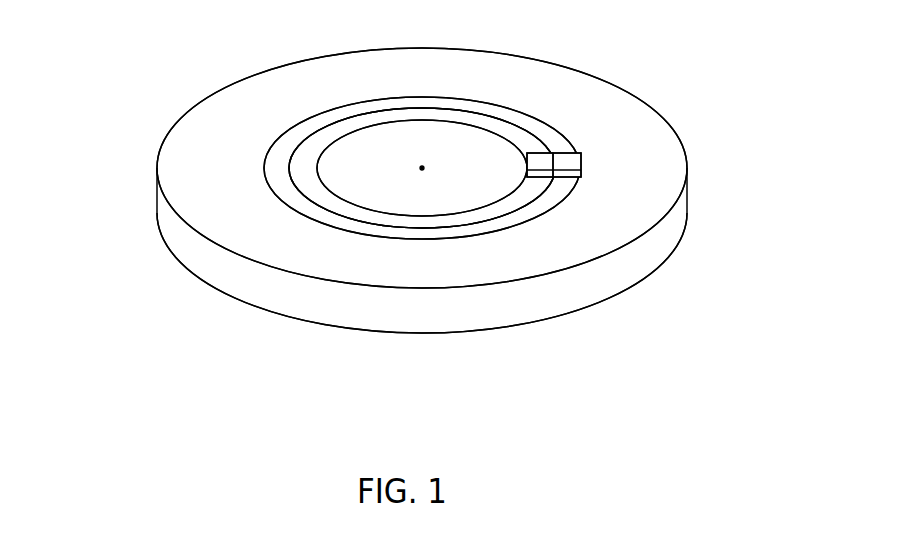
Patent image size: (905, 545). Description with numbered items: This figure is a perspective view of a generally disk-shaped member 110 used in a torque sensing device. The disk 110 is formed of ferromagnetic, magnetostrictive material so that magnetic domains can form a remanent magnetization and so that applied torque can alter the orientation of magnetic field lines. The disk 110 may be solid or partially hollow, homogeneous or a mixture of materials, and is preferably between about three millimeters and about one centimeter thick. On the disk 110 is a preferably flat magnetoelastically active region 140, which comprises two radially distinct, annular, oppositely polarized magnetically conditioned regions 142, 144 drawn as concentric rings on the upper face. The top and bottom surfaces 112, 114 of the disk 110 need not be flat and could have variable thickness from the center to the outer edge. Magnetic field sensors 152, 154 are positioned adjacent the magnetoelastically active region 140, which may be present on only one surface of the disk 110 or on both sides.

The disk-shaped member 110 is at (666, 106).
The top surface 112 is at (316, 256).
The bottom surface 114 is at (387, 353).
The magnetoelastically active region 140 is at (546, 104).
The magnetically conditioned region 142 is at (323, 137).
The magnetically conditioned region 144 is at (280, 158).
The magnetic field sensor 152 is at (542, 160).
The magnetic field sensor 154 is at (570, 160).